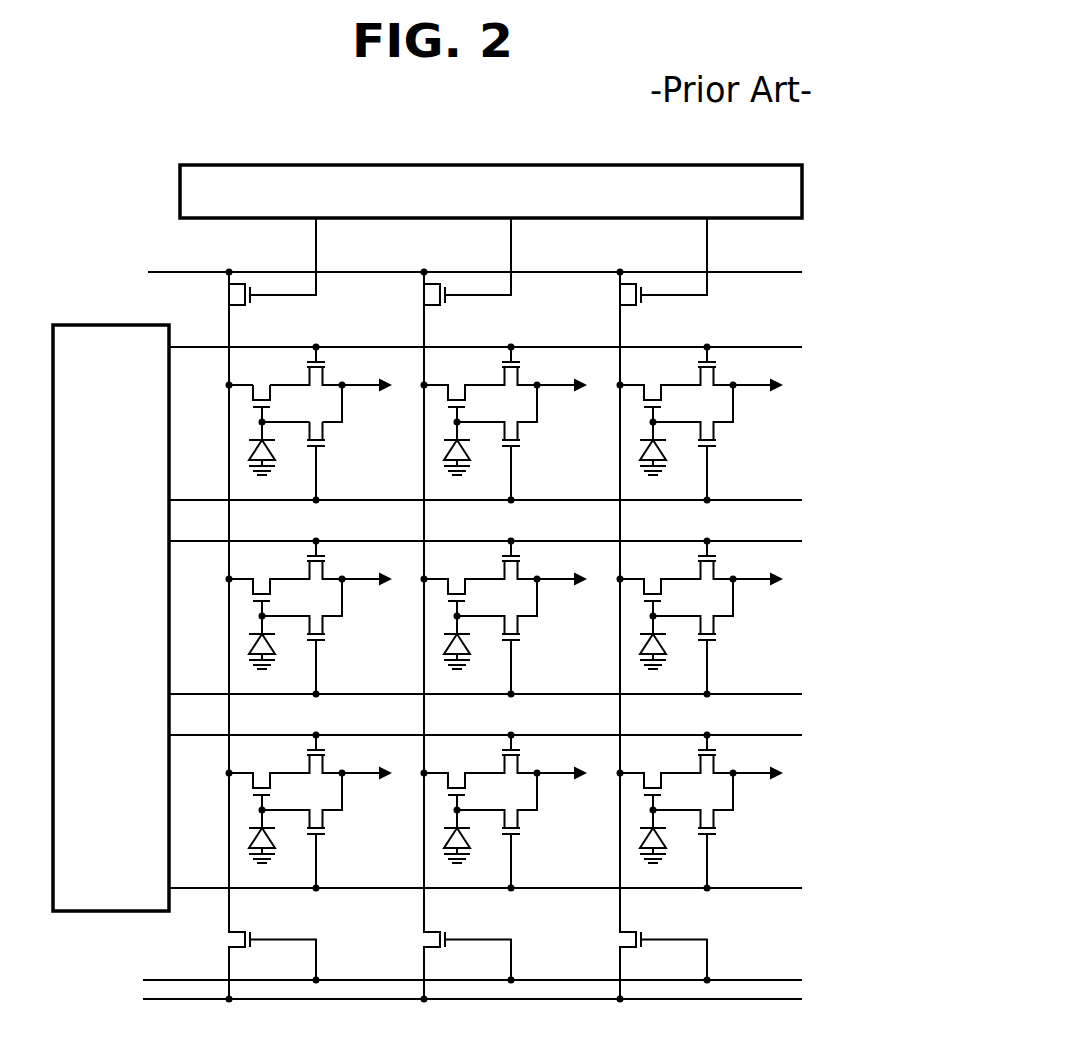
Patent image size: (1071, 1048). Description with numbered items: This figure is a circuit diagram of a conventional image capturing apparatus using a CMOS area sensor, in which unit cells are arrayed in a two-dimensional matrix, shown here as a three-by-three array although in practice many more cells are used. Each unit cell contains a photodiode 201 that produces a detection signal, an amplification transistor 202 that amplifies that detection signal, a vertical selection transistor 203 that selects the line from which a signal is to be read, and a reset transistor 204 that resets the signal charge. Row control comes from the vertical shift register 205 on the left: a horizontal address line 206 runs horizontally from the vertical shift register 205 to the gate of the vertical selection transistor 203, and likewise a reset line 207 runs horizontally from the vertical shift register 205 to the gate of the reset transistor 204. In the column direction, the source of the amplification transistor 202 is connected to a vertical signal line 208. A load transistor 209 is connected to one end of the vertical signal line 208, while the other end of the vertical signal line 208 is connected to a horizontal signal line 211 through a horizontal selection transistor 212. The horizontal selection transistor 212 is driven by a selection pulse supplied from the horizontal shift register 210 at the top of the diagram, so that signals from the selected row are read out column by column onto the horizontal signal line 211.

The photodiode 201 is at (275, 451).
The amplification transistor 202 is at (260, 396).
The vertical selection transistor 203 is at (332, 363).
The reset transistor 204 is at (332, 440).
The vertical shift register 205 is at (112, 322).
The horizontal address line 206 is at (197, 345).
The reset line 207 is at (197, 498).
The vertical signal line 208 is at (226, 958).
The load transistor 209 is at (255, 936).
The horizontal shift register 210 is at (487, 163).
The horizontal signal line 211 is at (183, 272).
The horizontal selection transistor 212 is at (257, 299).